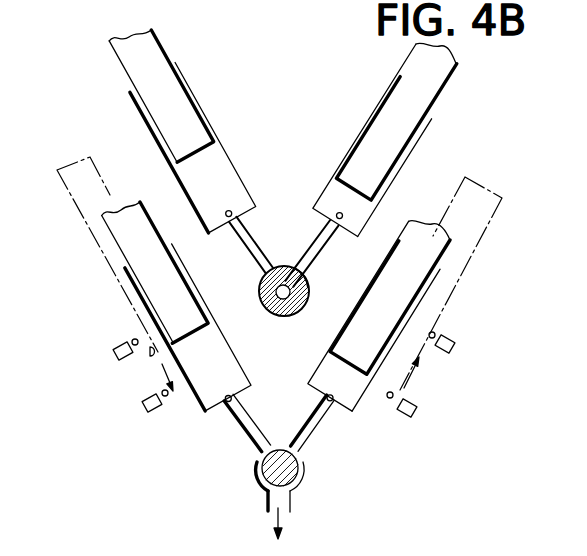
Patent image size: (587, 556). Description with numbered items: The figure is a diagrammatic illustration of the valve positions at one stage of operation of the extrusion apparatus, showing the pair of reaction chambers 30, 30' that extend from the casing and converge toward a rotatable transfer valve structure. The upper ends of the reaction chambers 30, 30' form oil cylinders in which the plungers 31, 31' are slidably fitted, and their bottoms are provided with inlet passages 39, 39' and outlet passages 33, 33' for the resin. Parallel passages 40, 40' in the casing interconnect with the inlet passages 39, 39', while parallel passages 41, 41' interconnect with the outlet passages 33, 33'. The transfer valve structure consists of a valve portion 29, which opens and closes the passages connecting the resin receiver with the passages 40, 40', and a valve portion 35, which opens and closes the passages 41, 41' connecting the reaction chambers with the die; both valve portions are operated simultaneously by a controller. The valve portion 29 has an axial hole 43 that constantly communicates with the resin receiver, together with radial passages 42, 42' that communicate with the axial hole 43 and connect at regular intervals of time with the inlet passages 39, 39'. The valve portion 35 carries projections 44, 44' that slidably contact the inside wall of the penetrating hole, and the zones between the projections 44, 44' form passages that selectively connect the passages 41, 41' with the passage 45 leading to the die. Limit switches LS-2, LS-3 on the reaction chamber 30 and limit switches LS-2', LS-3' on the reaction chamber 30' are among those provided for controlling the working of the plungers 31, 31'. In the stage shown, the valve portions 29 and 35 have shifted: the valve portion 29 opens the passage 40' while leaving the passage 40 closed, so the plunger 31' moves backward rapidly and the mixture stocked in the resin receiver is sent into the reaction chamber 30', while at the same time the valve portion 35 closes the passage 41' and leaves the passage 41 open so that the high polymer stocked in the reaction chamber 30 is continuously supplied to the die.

The valve portion 29 is at (294, 304).
The reaction chamber 30 is at (179, 220).
The reaction chamber 30' is at (371, 227).
The plunger 31 is at (187, 186).
The plunger 31' is at (389, 219).
The outlet passage 33 is at (218, 422).
The outlet passage 33' is at (347, 420).
The valve portion 35 is at (261, 468).
The inlet passage 39 is at (253, 194).
The inlet passage 39' is at (379, 210).
The passage 40 is at (261, 241).
The passage 40' is at (332, 253).
The passage 41 is at (252, 421).
The passage 41' is at (331, 434).
The radial passage 42 is at (258, 291).
The radial passage 42' is at (285, 261).
The axial hole 43 is at (292, 313).
The projection 44 is at (282, 450).
The projection 44' is at (322, 478).
The passage 45 is at (285, 503).
The limit switch LS-2 is at (104, 340).
The limit switch LS-3 is at (132, 393).
The limit switch LS-2' is at (461, 333).
The limit switch LS-3' is at (425, 399).